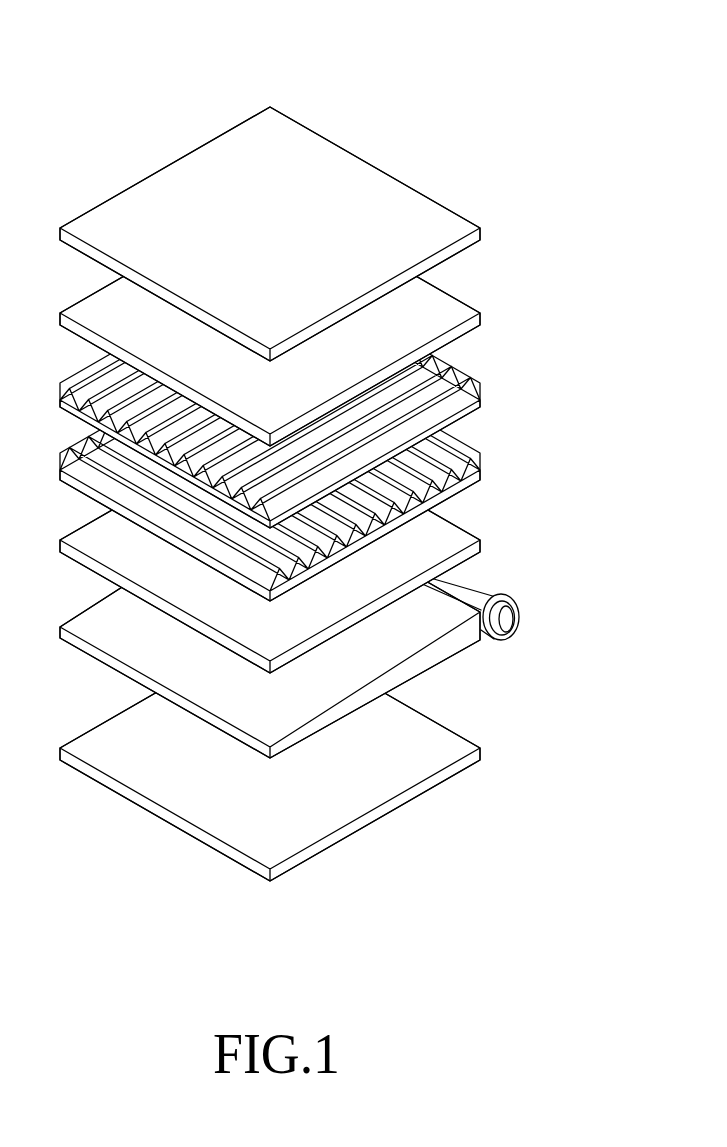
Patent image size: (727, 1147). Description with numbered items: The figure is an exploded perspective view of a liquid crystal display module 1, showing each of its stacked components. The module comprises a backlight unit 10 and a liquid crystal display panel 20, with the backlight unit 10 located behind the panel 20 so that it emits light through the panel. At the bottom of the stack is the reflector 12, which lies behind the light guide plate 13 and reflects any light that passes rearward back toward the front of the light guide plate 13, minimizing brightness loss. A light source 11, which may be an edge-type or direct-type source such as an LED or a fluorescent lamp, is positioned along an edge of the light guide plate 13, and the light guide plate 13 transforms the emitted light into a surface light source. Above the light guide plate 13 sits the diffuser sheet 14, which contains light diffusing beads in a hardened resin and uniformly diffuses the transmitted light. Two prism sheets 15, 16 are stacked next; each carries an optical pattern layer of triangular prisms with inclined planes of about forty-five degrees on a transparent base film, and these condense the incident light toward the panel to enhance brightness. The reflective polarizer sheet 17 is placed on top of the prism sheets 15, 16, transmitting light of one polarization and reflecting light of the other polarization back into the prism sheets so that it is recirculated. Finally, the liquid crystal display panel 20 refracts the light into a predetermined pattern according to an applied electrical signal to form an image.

The liquid crystal display module 1 is at (262, 39).
The backlight unit 10 is at (585, 865).
The light source 11 is at (510, 618).
The reflector 12 is at (423, 790).
The light guide plate 13 is at (443, 648).
The diffuser sheet 14 is at (482, 541).
The prism sheet 15 is at (482, 471).
The prism sheet 16 is at (482, 401).
The reflective polarizer sheet 17 is at (482, 317).
The liquid crystal display panel 20 is at (482, 233).